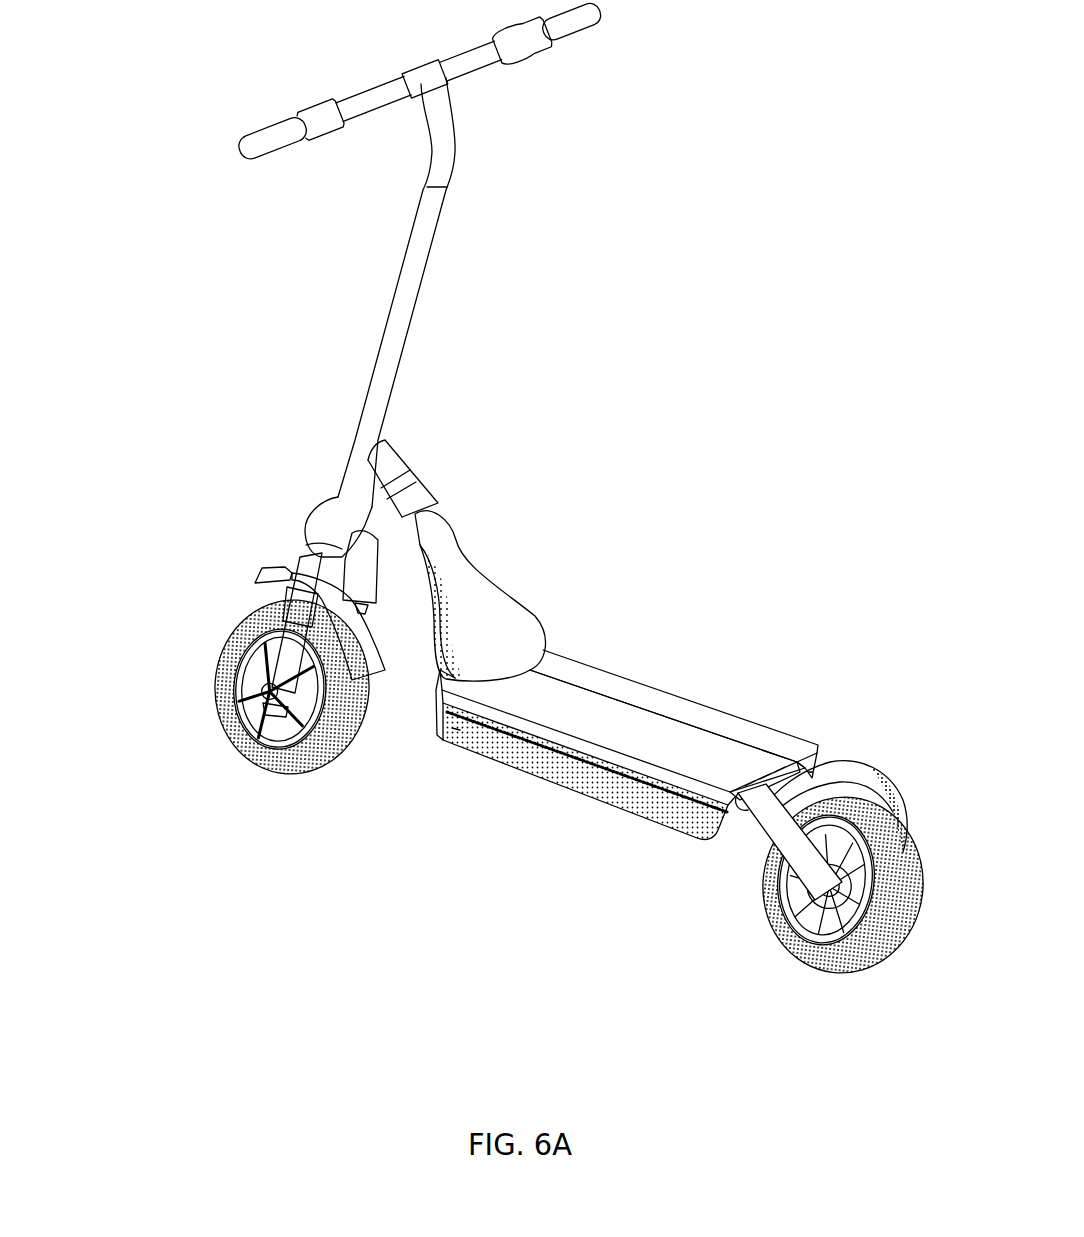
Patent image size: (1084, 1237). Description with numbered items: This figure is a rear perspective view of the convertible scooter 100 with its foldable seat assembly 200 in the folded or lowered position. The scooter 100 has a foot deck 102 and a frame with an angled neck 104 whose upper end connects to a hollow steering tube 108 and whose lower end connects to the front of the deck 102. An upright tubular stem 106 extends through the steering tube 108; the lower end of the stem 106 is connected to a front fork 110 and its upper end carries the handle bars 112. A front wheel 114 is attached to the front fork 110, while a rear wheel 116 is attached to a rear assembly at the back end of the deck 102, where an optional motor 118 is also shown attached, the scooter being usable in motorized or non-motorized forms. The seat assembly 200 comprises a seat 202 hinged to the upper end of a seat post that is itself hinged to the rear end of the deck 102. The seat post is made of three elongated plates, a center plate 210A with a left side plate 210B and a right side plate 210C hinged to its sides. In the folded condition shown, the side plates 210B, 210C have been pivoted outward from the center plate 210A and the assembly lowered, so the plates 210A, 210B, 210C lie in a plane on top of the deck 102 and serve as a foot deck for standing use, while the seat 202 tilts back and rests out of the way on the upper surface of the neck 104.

The convertible scooter 100 is at (760, 184).
The foot deck 102 is at (468, 730).
The angled neck 104 is at (404, 496).
The tubular stem 106 is at (416, 268).
The steering tube 108 is at (343, 486).
The front fork 110 is at (300, 567).
The handle bars 112 is at (377, 120).
The front wheel 114 is at (215, 665).
The rear wheel 116 is at (772, 895).
The motor 118 is at (877, 763).
The foldable seat assembly 200 is at (748, 520).
The seat 202 is at (467, 590).
The center plate 210A is at (668, 735).
The left side plate 210B is at (560, 715).
The right side plate 210C is at (595, 680).